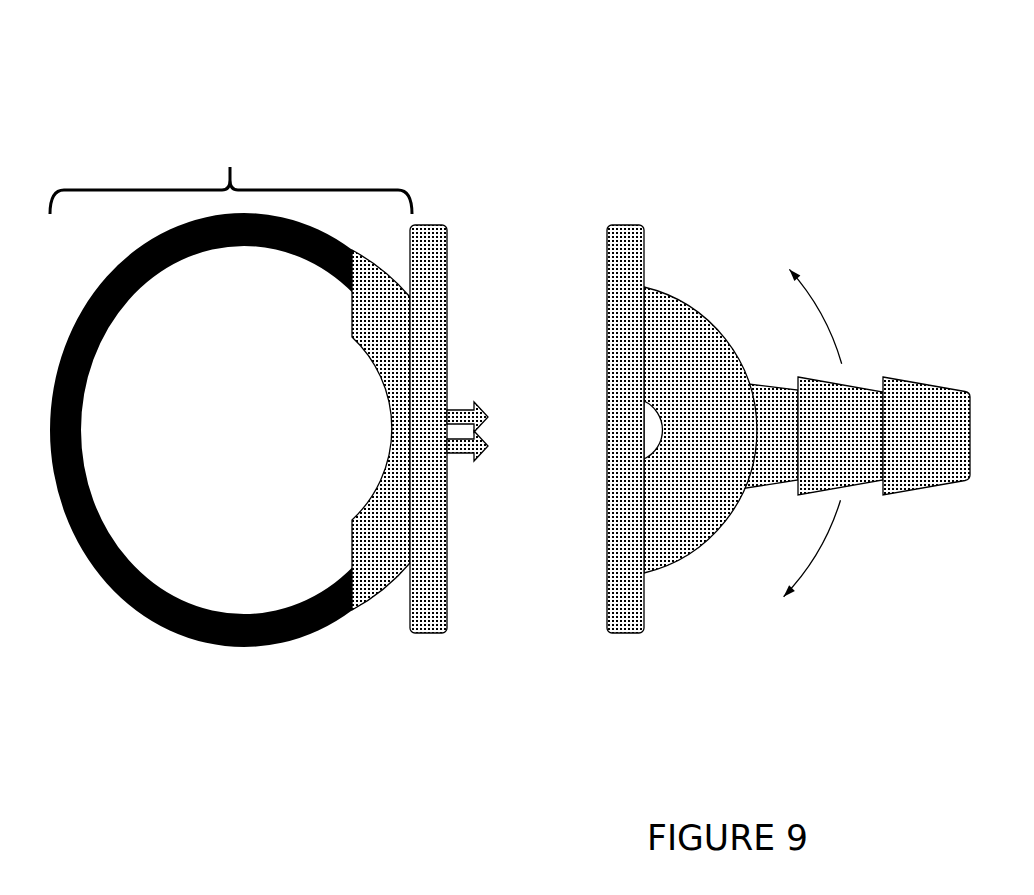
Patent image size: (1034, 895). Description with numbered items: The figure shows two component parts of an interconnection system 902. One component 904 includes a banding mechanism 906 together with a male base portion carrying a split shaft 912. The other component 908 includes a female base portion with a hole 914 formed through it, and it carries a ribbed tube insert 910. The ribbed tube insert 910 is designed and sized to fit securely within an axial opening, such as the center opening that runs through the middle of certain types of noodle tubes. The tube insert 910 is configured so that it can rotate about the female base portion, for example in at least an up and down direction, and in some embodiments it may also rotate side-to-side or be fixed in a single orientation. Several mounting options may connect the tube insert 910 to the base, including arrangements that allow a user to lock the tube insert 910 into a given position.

The interconnection system 902 is at (528, 145).
The component 904 is at (398, 670).
The banding mechanism 906 is at (244, 378).
The component 908 is at (632, 682).
The ribbed tube insert 910 is at (947, 495).
The split shaft 912 is at (490, 397).
The hole 914 is at (597, 448).